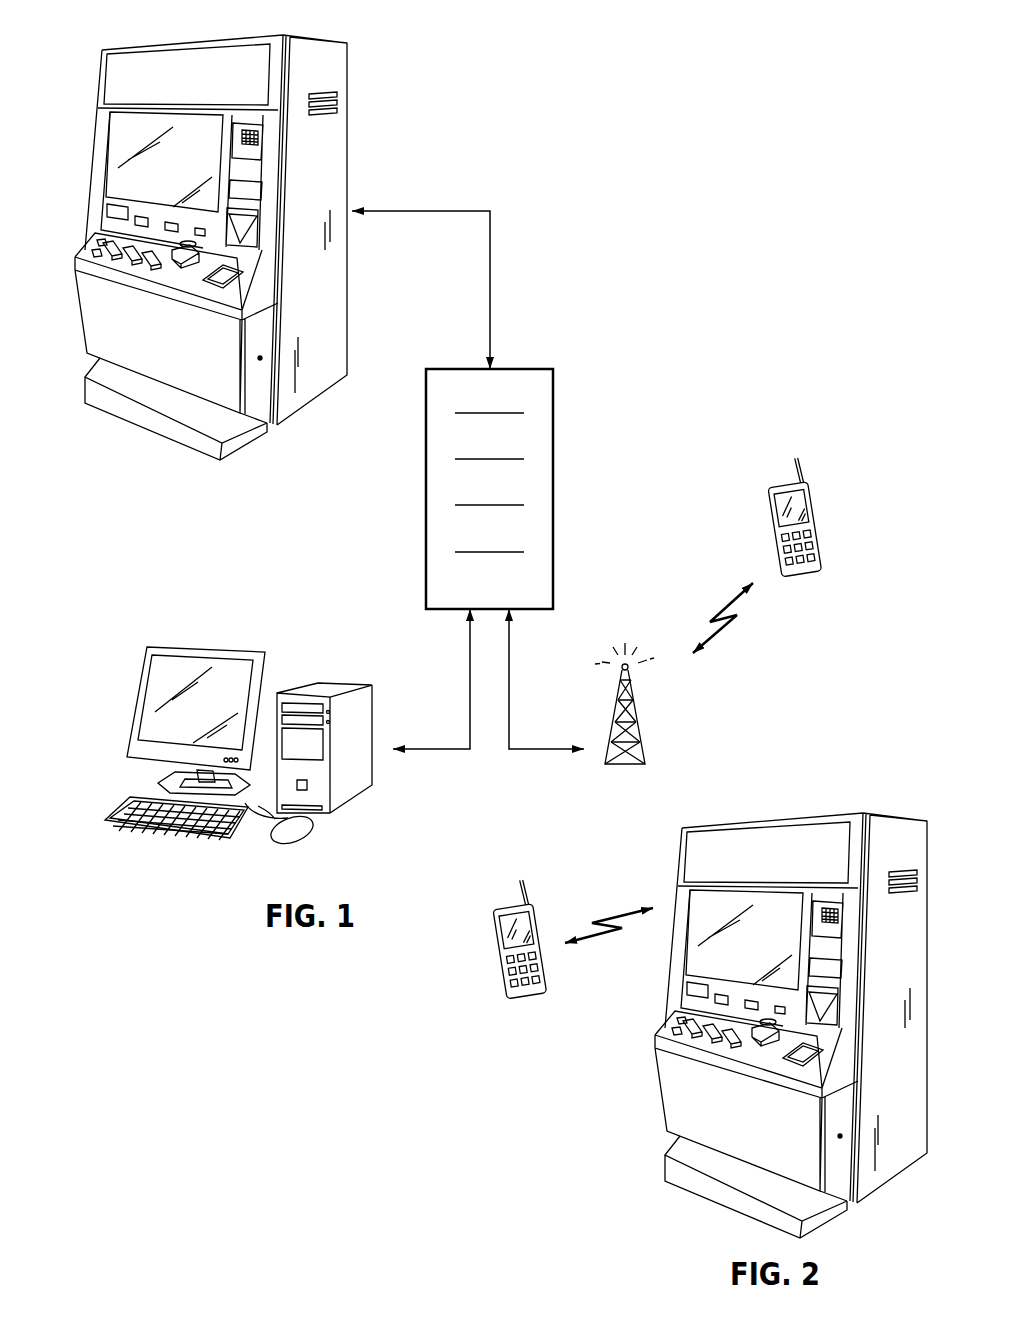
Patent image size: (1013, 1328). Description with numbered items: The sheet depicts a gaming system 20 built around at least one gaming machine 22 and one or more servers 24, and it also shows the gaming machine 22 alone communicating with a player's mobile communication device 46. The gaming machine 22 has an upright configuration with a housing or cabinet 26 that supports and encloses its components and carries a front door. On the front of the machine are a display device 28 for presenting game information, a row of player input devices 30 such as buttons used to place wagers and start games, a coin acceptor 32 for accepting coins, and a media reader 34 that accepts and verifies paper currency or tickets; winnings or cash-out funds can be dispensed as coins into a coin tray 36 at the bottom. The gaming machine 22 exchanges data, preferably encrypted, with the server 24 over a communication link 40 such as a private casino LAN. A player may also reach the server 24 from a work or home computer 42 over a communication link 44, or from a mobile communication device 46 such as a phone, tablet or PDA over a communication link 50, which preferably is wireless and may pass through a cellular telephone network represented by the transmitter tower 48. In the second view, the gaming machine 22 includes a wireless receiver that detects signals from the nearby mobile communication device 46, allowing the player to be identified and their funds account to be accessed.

In FIG. 1, the gaming system 20 is at (643, 128).
In FIG. 1, the gaming machine 22 is at (245, 256).
In FIG. 2, the gaming machine 22 is at (892, 805).
In FIG. 1, the server 24 is at (565, 430).
In FIG. 1, the housing or cabinet 26 is at (335, 132).
In FIG. 1, the display device 28 is at (117, 153).
In FIG. 1, the player input devices 30 is at (140, 268).
In FIG. 1, the coin acceptor 32 is at (181, 260).
In FIG. 1, the media reader 34 is at (233, 278).
In FIG. 1, the coin tray 36 is at (200, 418).
In FIG. 1, the communication link 40 is at (490, 278).
In FIG. 1, the computer 42 is at (290, 633).
In FIG. 1, the communication link 44 is at (447, 750).
In FIG. 1, the mobile communication device 46 is at (830, 525).
In FIG. 2, the mobile communication device 46 is at (493, 962).
In FIG. 1, the wireless transmitter 48 is at (645, 722).
In FIG. 1, the communication link 50 is at (723, 603).